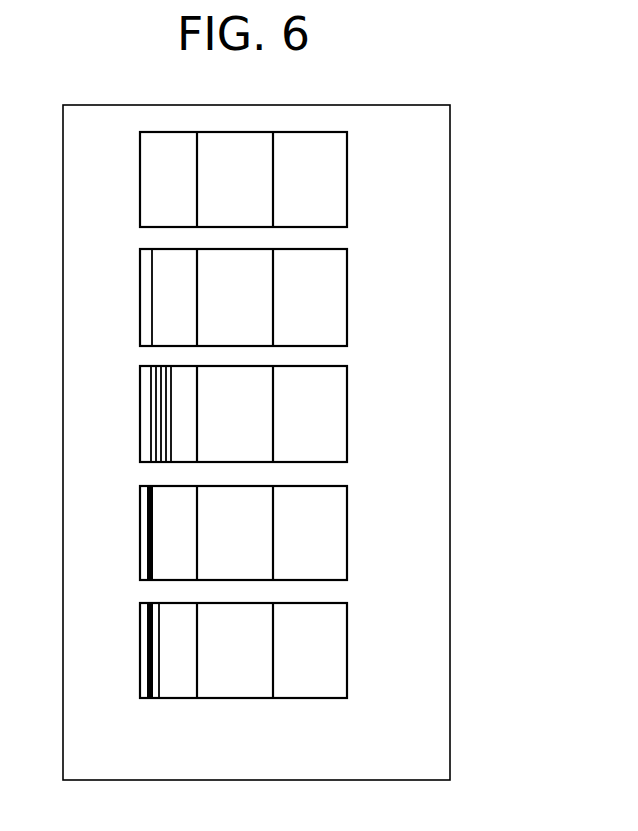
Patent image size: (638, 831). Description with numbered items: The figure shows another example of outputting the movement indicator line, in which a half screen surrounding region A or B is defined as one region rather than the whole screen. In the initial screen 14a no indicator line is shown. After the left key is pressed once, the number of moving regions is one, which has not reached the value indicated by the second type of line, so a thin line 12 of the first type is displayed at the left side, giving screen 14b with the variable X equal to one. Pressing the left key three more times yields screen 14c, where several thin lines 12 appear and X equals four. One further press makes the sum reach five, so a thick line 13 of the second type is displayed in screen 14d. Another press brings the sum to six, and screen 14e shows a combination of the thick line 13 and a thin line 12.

The thin line 12 is at (152, 249).
The thick line 13 is at (150, 486).
The screen 14a is at (347, 160).
The screen 14b is at (347, 278).
The screen 14c is at (347, 395).
The screen 14d is at (347, 515).
The screen 14e is at (347, 632).